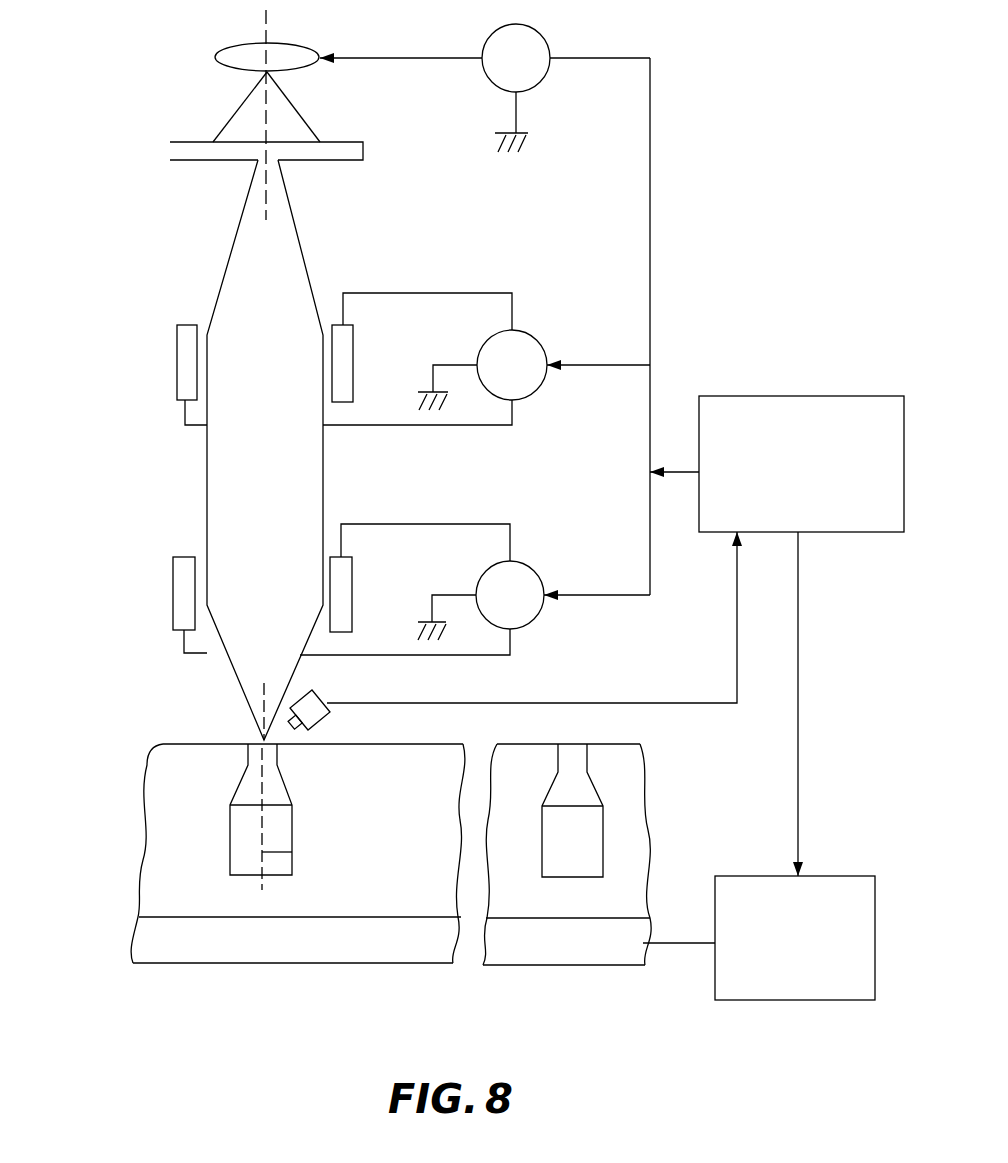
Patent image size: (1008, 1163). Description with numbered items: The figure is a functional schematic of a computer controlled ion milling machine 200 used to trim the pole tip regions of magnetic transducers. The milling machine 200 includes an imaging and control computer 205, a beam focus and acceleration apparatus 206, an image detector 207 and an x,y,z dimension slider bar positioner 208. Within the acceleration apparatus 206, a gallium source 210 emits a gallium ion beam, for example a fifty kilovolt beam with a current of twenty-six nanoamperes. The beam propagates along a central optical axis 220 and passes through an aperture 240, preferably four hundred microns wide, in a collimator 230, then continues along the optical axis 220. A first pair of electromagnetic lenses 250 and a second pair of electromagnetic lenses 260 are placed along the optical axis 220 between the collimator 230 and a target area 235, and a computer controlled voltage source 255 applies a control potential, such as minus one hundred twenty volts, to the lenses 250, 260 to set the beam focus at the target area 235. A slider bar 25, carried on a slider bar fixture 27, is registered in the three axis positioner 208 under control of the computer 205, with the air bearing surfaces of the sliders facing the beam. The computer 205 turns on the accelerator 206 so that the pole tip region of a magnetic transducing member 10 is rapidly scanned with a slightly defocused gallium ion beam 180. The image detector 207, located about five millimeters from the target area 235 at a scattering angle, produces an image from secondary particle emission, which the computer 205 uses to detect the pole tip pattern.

The gallium source 210 is at (320, 47).
The defocused gallium ion beam 180 is at (283, 88).
The collimator 230 is at (363, 150).
The aperture 240 is at (257, 162).
The first pair of electromagnetic lenses 250 is at (176, 367).
The computer controlled voltage source 255 is at (543, 388).
The second pair of electromagnetic lenses 260 is at (172, 585).
The beam focus and acceleration apparatus 206 is at (138, 645).
The image detector 207 is at (327, 688).
The target area 235 is at (260, 740).
The imaging and control computer 205 is at (750, 395).
The x,y,z dimension slider bar positioner 208 is at (714, 972).
The computer controlled ion milling machine 200 is at (120, 937).
The slider bar 25 is at (172, 793).
The slider bar fixture 27 is at (300, 948).
The magnetic transducing member 10 is at (292, 815).
The central optical axis 220 is at (292, 852).